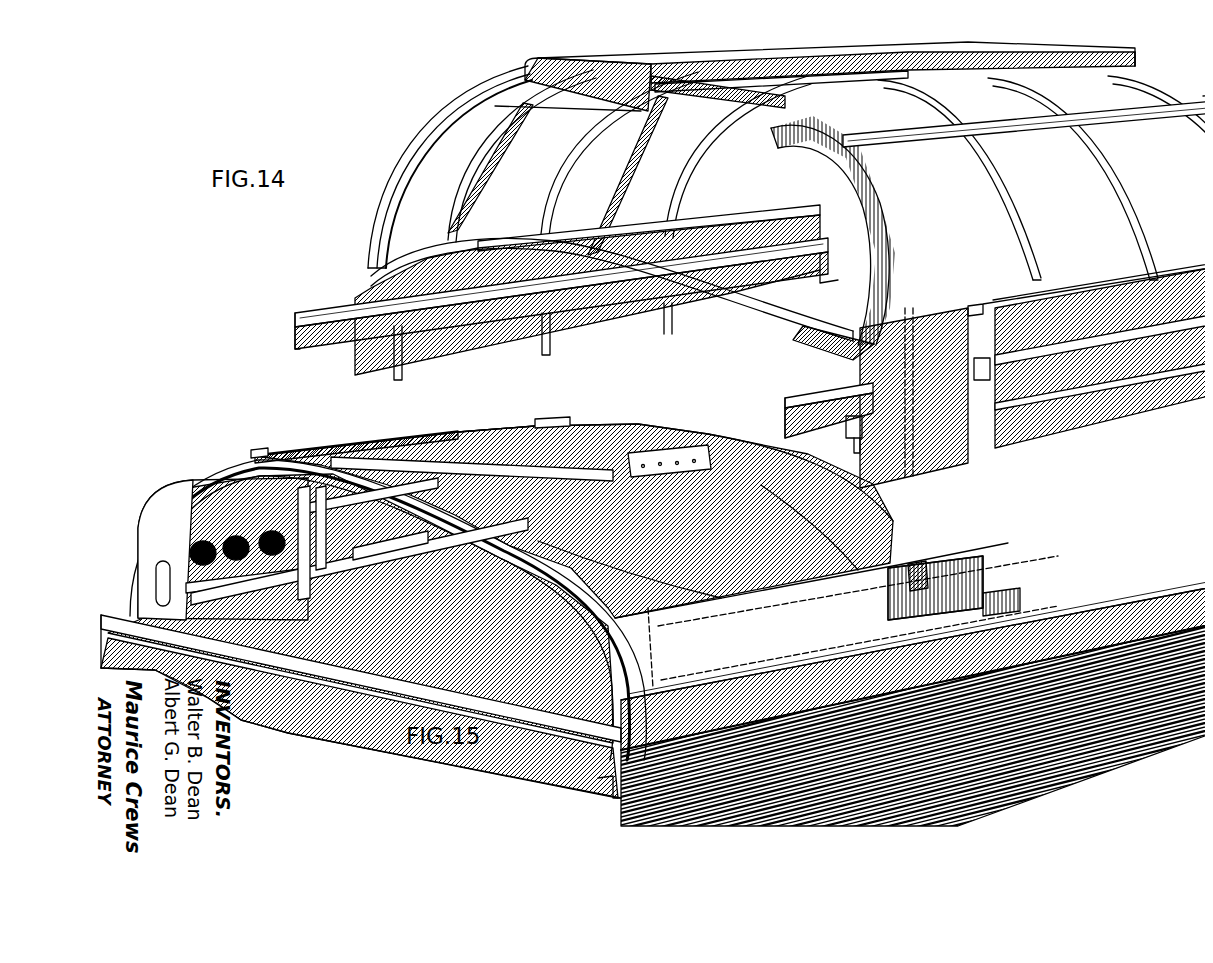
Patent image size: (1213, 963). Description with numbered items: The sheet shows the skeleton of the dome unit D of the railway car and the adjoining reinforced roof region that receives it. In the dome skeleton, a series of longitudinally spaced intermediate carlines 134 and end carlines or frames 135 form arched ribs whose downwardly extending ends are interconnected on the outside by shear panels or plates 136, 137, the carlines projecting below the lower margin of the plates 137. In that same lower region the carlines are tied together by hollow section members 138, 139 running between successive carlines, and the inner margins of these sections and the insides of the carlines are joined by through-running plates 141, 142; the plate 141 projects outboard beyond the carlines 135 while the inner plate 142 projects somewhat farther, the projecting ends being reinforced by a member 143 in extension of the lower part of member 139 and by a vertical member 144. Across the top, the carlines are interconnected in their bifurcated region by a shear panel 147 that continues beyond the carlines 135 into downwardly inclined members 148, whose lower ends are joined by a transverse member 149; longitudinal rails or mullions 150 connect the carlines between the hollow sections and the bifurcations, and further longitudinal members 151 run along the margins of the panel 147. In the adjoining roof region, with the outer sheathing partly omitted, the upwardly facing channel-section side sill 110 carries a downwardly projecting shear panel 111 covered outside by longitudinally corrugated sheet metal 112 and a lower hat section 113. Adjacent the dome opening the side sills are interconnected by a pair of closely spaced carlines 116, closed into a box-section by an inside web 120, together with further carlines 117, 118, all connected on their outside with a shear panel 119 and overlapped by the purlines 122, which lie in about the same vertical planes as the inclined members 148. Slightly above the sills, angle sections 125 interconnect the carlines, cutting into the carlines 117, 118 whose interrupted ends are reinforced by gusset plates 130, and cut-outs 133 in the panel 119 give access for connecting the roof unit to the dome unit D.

In FIG. 15, the side sill 110 is at (115, 645).
In FIG. 15, the shear panel 111 is at (320, 690).
In FIG. 15, the longitudinally corrugated sheet metal 112 is at (1165, 620).
In FIG. 15, the lower hat section 113 is at (1160, 738).
In FIG. 15, the closely spaced carlines 116 is at (608, 672).
In FIG. 15, the carline 117 is at (300, 598).
In FIG. 15, the carline 118 is at (465, 520).
In FIG. 15, the shear panel 119 is at (865, 520).
In FIG. 15, the web 120 is at (132, 590).
In FIG. 15, the purline 122 is at (255, 436).
In FIG. 15, the angle section 125 is at (362, 545).
In FIG. 15, the gusset plate 130 is at (322, 490).
In FIG. 15, the cut-out 133 is at (915, 555).
In FIG. 14, the intermediate carline 134 is at (1115, 160).
In FIG. 14, the end carline 135 is at (885, 228).
In FIG. 14, the shear panel 136 is at (990, 292).
In FIG. 14, the shear plate 137 is at (620, 312).
In FIG. 14, the hollow section member 138 is at (730, 212).
In FIG. 14, the hollow section member 139 is at (800, 275).
In FIG. 14, the through-running plate 141 is at (838, 425).
In FIG. 14, the inner plate 142 is at (300, 338).
In FIG. 14, the reinforcing member 143 is at (318, 306).
In FIG. 14, the vertical member 144 is at (846, 440).
In FIG. 14, the shear panel 147 is at (542, 52).
In FIG. 14, the downwardly inclined member 148 is at (485, 148).
In FIG. 14, the transverse member 149 is at (748, 305).
In FIG. 14, the longitudinal rail 150 is at (895, 135).
In FIG. 14, the longitudinal member 151 is at (1135, 50).
In FIG. 14, the dome unit D is at (412, 128).